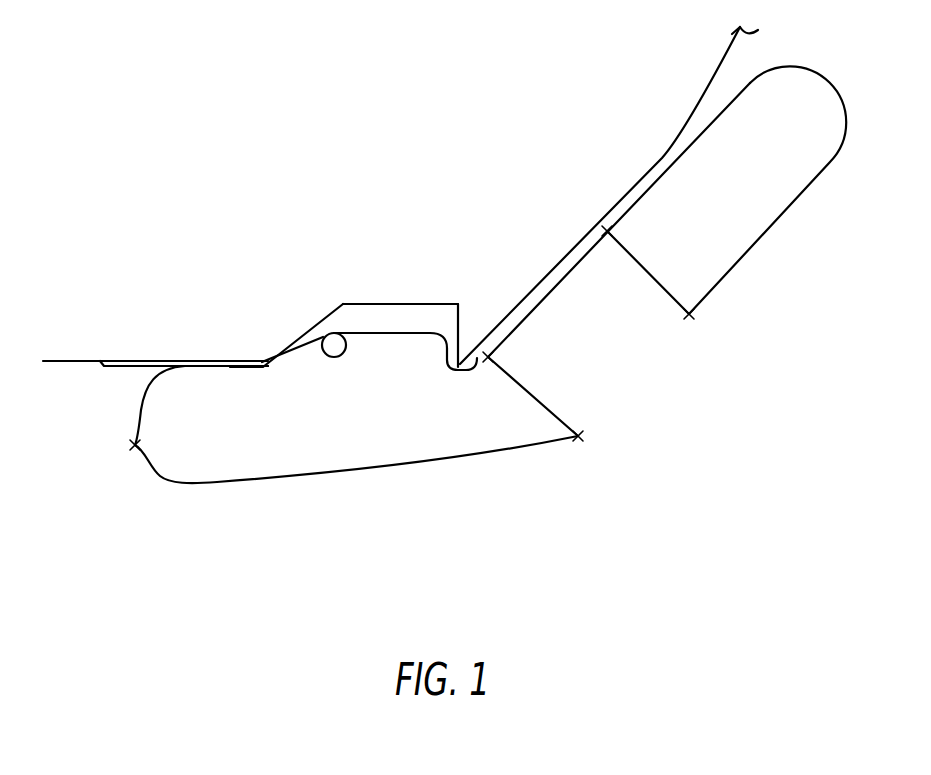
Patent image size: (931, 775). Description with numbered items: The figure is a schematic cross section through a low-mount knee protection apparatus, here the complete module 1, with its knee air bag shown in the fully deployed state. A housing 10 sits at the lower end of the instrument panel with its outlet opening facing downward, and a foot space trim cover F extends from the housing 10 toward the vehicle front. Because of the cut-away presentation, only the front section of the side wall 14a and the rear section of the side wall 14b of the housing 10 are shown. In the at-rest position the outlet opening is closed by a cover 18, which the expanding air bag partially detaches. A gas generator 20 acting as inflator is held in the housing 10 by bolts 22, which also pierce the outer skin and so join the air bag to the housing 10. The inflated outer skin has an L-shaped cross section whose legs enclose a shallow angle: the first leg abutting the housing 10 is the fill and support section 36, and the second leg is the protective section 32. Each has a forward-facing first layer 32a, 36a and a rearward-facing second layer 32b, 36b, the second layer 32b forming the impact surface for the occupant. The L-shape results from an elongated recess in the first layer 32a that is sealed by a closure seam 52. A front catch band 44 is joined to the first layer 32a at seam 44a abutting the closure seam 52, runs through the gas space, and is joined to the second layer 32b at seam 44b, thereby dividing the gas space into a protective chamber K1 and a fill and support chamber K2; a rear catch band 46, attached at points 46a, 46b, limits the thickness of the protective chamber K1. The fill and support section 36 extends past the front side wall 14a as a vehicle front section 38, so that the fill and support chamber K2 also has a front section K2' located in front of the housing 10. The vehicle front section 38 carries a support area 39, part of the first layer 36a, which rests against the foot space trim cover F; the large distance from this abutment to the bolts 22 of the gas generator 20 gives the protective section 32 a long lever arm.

The device 1 is at (658, 160).
The housing 10 is at (412, 304).
The front section of the side wall 14a is at (280, 347).
The rear section of the side wall 14b is at (458, 304).
The cover 18 is at (133, 368).
The gas generator 20 is at (343, 342).
The bolts 22 is at (320, 342).
The protective section 32 is at (780, 217).
The first layer of the protective section 32a is at (583, 248).
The second layer of the protective section 32b is at (812, 185).
The fill and support section 36 is at (418, 463).
The first layer of the fill and support section 36a is at (262, 362).
The second layer of the fill and support section 36b is at (358, 467).
The vehicle front section 38 is at (173, 482).
The support area 39 is at (186, 362).
The front catch band 44 is at (543, 384).
The seam 44a is at (488, 355).
The seam 44b is at (578, 436).
The rear catch band 46 is at (655, 270).
The second link first joint 46a is at (605, 232).
The second link second joint 46b is at (689, 314).
The closure seam 52 is at (478, 358).
The foot space trim cover F is at (77, 360).
The protective chamber K1 is at (807, 117).
The fill and support chamber K2 is at (360, 454).
The front section of the fill and support chamber K2' is at (206, 527).